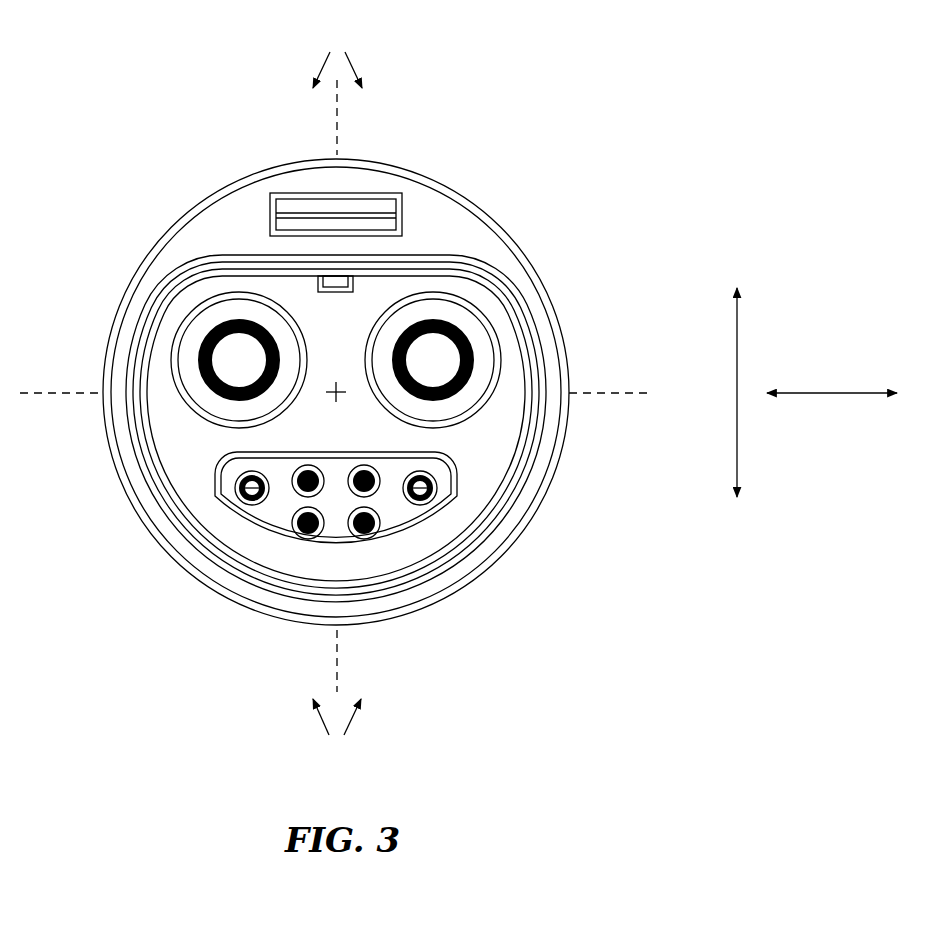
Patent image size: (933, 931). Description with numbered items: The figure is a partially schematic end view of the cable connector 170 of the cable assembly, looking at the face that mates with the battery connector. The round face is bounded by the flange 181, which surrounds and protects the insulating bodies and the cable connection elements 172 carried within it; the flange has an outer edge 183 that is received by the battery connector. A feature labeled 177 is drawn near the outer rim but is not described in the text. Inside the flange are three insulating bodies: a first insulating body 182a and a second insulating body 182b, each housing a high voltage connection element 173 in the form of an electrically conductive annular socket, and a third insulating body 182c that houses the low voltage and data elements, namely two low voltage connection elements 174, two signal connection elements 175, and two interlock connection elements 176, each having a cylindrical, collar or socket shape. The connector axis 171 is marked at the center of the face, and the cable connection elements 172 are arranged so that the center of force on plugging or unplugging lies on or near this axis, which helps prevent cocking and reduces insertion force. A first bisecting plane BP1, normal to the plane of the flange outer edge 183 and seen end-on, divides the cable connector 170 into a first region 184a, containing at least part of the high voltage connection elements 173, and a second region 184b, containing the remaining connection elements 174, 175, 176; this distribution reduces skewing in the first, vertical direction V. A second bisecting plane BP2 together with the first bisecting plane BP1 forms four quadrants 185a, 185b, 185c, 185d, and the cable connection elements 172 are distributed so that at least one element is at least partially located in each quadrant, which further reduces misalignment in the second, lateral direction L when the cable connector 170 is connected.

The cable connector 170 is at (98, 495).
The connector axis 171 is at (336, 383).
The cable connection elements 172 is at (483, 198).
The high voltage connection element 173 is at (197, 350).
The low voltage connection elements 174 is at (250, 505).
The signal connection elements 175 is at (300, 535).
The interlock connection elements 176 is at (300, 492).
The outer rim 177 is at (440, 184).
The flange 181 is at (490, 273).
The first insulating body 182a is at (200, 306).
The second insulating body 182b is at (500, 297).
The third insulating body 182c is at (453, 468).
The outer edge 183 is at (507, 522).
The first region 184a is at (337, 58).
The second region 184b is at (337, 693).
The first quadrant 185a is at (83, 194).
The second quadrant 185b is at (590, 194).
The third quadrant 185c is at (82, 639).
The fourth quadrant 185d is at (590, 639).
The first bisecting plane BP1 is at (38, 398).
The second bisecting plane BP2 is at (337, 120).
The first direction V is at (736, 360).
The second direction L is at (835, 390).